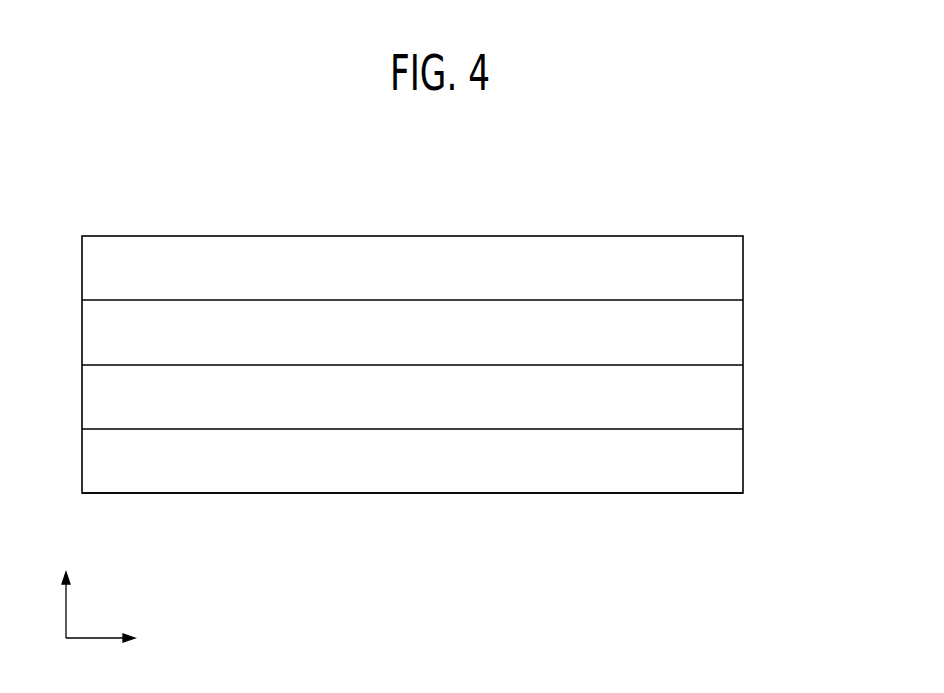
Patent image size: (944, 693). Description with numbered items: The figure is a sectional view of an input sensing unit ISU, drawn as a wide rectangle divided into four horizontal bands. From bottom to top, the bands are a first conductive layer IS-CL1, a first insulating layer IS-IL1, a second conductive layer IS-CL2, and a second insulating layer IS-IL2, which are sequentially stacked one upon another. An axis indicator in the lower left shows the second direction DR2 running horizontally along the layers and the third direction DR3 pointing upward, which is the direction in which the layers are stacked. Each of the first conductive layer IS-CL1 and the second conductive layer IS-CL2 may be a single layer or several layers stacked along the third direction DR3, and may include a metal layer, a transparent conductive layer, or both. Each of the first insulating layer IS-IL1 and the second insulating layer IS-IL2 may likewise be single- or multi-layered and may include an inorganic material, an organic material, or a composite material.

The input sensing unit ISU is at (758, 182).
The second insulating layer IS-IL2 is at (743, 270).
The second conductive layer IS-CL2 is at (743, 334).
The first insulating layer IS-IL1 is at (743, 398).
The first conductive layer IS-CL1 is at (743, 462).
The third direction DR3 is at (66, 588).
The second direction DR2 is at (120, 638).